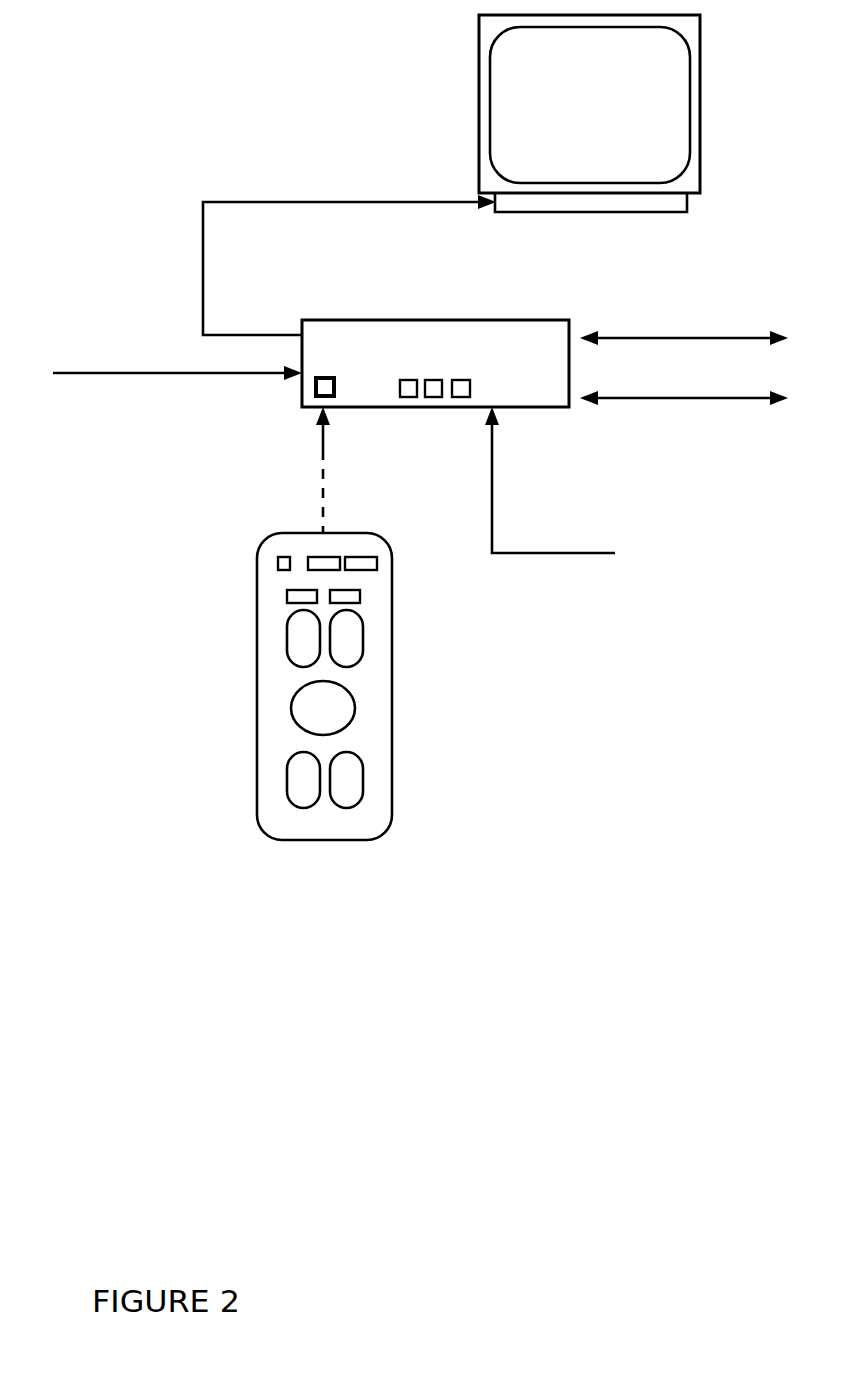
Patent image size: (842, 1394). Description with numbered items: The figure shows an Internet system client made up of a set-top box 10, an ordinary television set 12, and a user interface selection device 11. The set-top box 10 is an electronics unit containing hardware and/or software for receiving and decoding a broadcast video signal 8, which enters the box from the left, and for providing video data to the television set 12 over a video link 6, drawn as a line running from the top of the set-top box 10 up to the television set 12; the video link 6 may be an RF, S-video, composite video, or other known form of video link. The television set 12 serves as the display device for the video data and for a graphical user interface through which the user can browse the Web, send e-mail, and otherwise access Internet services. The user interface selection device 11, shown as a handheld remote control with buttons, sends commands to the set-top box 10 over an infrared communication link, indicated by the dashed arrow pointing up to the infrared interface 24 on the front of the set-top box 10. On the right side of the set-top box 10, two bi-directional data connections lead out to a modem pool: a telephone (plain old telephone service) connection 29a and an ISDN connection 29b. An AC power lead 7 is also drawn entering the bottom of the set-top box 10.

The television set 12 is at (589, 113).
The video link 6 is at (193, 260).
The set-top box 10 is at (435, 364).
The infrared interface 24 is at (336, 388).
The broadcast video signal 8 is at (270, 380).
The telephone connection 29a is at (622, 334).
The ISDN connection 29b is at (685, 408).
The AC power cord 7 is at (567, 562).
The user interface selection device 11 is at (324, 623).